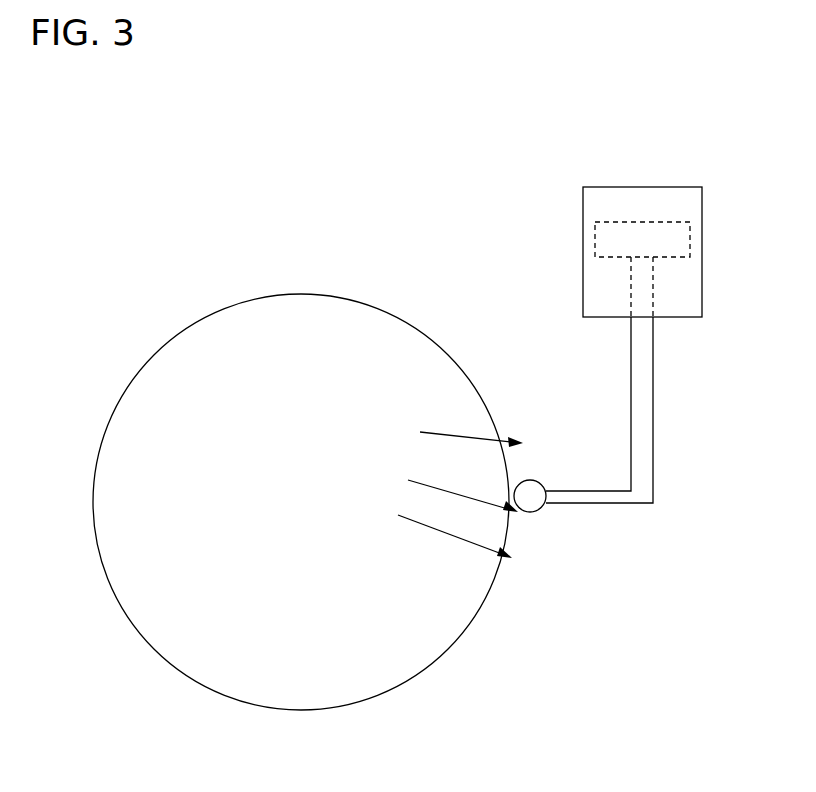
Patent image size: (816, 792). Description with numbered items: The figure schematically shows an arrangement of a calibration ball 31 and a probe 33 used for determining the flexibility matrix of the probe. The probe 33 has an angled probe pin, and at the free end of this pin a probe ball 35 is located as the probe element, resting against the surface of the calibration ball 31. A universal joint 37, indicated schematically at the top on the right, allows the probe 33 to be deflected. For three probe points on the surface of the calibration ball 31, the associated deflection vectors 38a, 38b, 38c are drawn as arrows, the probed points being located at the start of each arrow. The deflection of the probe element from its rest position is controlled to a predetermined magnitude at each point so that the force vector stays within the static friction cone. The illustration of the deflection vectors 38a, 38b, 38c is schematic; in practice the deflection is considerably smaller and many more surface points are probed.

The calibration ball 31 is at (113, 412).
The probe 33 is at (655, 477).
The probe ball 35 is at (543, 513).
The universal joint 37 is at (702, 285).
The deflection vector 38a is at (423, 530).
The deflection vector 38b is at (418, 482).
The deflection vector 38c is at (470, 438).